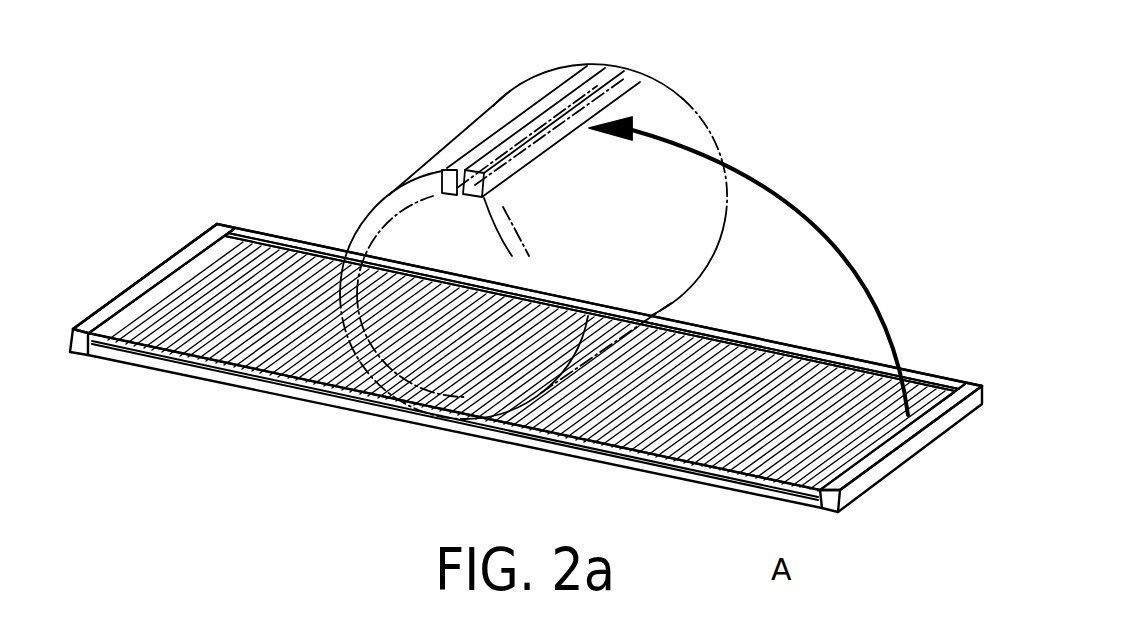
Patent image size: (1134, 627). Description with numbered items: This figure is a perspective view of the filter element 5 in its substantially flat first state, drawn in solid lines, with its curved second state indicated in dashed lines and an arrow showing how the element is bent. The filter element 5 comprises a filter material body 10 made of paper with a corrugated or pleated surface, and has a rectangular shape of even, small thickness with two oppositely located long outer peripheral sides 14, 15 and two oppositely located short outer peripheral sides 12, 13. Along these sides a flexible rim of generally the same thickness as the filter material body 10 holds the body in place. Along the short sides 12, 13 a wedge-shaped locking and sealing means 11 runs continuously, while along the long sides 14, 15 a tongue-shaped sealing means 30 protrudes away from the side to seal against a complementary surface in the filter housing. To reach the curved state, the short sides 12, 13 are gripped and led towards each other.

The filter element 5 is at (813, 130).
The filter material body 10 is at (263, 333).
The wedge-shaped locking and sealing means 11 is at (127, 287).
The short outer peripheral side 12 is at (175, 250).
The short outer peripheral side 13 is at (927, 435).
The long outer peripheral side 14 is at (153, 358).
The long outer peripheral side 15 is at (277, 243).
The tongue-shaped sealing means 30 is at (916, 380).